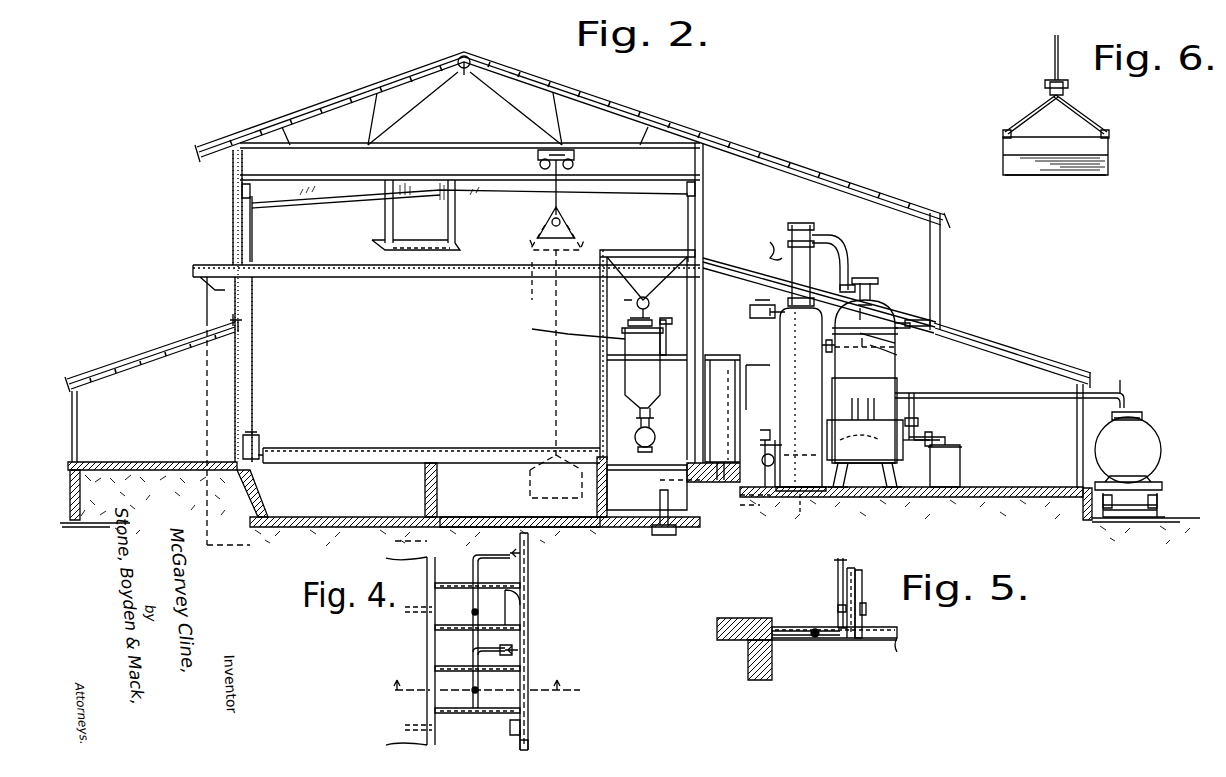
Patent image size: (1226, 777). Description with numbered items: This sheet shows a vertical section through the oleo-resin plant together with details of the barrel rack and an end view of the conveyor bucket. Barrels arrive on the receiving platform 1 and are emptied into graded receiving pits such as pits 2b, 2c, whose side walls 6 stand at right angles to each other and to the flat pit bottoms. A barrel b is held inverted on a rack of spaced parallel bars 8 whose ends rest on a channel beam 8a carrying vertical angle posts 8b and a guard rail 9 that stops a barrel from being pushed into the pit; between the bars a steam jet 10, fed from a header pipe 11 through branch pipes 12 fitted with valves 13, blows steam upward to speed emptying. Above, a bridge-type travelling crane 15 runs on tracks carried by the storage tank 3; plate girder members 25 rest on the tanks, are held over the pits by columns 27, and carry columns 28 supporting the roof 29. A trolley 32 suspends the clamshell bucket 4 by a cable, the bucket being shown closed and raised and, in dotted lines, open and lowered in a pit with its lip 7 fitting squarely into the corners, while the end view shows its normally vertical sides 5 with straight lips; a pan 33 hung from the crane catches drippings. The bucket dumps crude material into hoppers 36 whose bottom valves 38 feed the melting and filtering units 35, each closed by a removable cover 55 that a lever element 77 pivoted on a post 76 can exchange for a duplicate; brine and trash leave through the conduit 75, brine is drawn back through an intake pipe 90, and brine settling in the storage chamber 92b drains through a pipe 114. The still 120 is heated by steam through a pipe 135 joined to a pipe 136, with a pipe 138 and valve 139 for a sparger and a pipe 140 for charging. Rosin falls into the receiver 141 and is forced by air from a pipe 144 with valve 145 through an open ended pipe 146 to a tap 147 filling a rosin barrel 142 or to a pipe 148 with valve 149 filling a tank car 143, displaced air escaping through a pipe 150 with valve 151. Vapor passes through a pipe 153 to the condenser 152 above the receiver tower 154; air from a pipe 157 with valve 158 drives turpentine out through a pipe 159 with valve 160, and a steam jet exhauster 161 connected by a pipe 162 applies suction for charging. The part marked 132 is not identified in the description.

In FIG. 2, the receiving platform 1 is at (125, 462).
In FIG. 2, the receiving pit 2b is at (300, 531).
In FIG. 2, the receiving pit 2c is at (428, 548).
In FIG. 2, the storage tank 3 is at (207, 306).
In FIG. 2, the clamshell bucket 4 is at (577, 227).
In FIG. 6, the clamshell bucket 4 is at (1093, 146).
In FIG. 4, the bucket sides 5 is at (476, 692).
In FIG. 6, the bucket sides 5 is at (1108, 161).
In FIG. 2, the pit partition or side wall 6 is at (425, 484).
In FIG. 2, the bucket lip 7 is at (528, 271).
In FIG. 6, the bucket lip 7 is at (1070, 177).
In FIG. 2, the parallel bars 8 is at (262, 470).
In FIG. 4, the parallel bars 8 is at (510, 603).
In FIG. 5, the parallel bars 8 is at (790, 627).
In FIG. 2, the channel beam 8a is at (375, 445).
In FIG. 5, the channel beam 8a is at (880, 625).
In FIG. 4, the vertical angle posts 8b is at (515, 734).
In FIG. 5, the vertical angle posts 8b is at (847, 581).
In FIG. 4, the guard rail 9 is at (528, 701).
In FIG. 5, the guard rail 9 is at (862, 571).
In FIG. 4, the steam jet 10 is at (470, 636).
In FIG. 5, the steam jet 10 is at (812, 628).
In FIG. 4, the header pipe 11 is at (530, 746).
In FIG. 5, the header pipe 11 is at (876, 593).
In FIG. 4, the branch pipe 12 is at (512, 644).
In FIG. 5, the branch pipe 12 is at (825, 641).
In FIG. 4, the valve 13 is at (528, 539).
In FIG. 5, the valve 13 is at (843, 579).
In FIG. 2, the travelling crane 15 is at (360, 213).
In FIG. 2, the plate girder member 25 is at (253, 230).
In FIG. 2, the column 27 is at (253, 351).
In FIG. 2, the column 28 is at (233, 190).
In FIG. 2, the roof 29 is at (341, 98).
In FIG. 2, the trolley 32 is at (566, 152).
In FIG. 2, the pan 33 is at (462, 257).
In FIG. 2, the melting and filtering unit 35 is at (625, 344).
In FIG. 2, the hopper 36 is at (600, 286).
In FIG. 2, the valve 38 is at (641, 293).
In FIG. 2, the removable cover 55 is at (698, 319).
In FIG. 2, the conduit 75 is at (660, 430).
In FIG. 2, the post 76 is at (676, 339).
In FIG. 2, the lever element 77 is at (650, 301).
In FIG. 2, the intake pipe 90 is at (660, 495).
In FIG. 2, the storage chamber 92b is at (765, 320).
In FIG. 2, the pipe 114 is at (970, 515).
In FIG. 2, the still 120 is at (900, 384).
In FIG. 2, the pipe 132 is at (815, 346).
In FIG. 2, the pipe 135 is at (895, 344).
In FIG. 2, the pipe 136 is at (890, 361).
In FIG. 2, the pipe 138 is at (915, 323).
In FIG. 2, the valve 139 is at (912, 308).
In FIG. 2, the pipe 140 is at (940, 334).
In FIG. 2, the receiver 141 is at (960, 459).
In FIG. 2, the rosin barrel 142 is at (891, 514).
In FIG. 2, the tank car 143 is at (1140, 441).
In FIG. 2, the pipe 144 is at (832, 411).
In FIG. 2, the valve 145 is at (865, 440).
In FIG. 2, the open ended pipe 146 is at (917, 458).
In FIG. 2, the tap 147 is at (947, 434).
In FIG. 2, the pipe 148 is at (1110, 393).
In FIG. 2, the valve 149 is at (920, 421).
In FIG. 2, the pipe 150 is at (889, 406).
In FIG. 2, the valve 151 is at (869, 395).
In FIG. 2, the condenser 152 is at (790, 241).
In FIG. 2, the pipe 153 is at (840, 250).
In FIG. 2, the tower 154 is at (766, 387).
In FIG. 2, the pipe 157 is at (769, 252).
In FIG. 2, the valve 158 is at (780, 311).
In FIG. 2, the pipe 159 is at (716, 418).
In FIG. 2, the valve 160 is at (767, 441).
In FIG. 2, the steam jet exhauster 161 is at (870, 302).
In FIG. 2, the pipe 162 is at (857, 265).
In FIG. 2, the barrel b is at (260, 440).